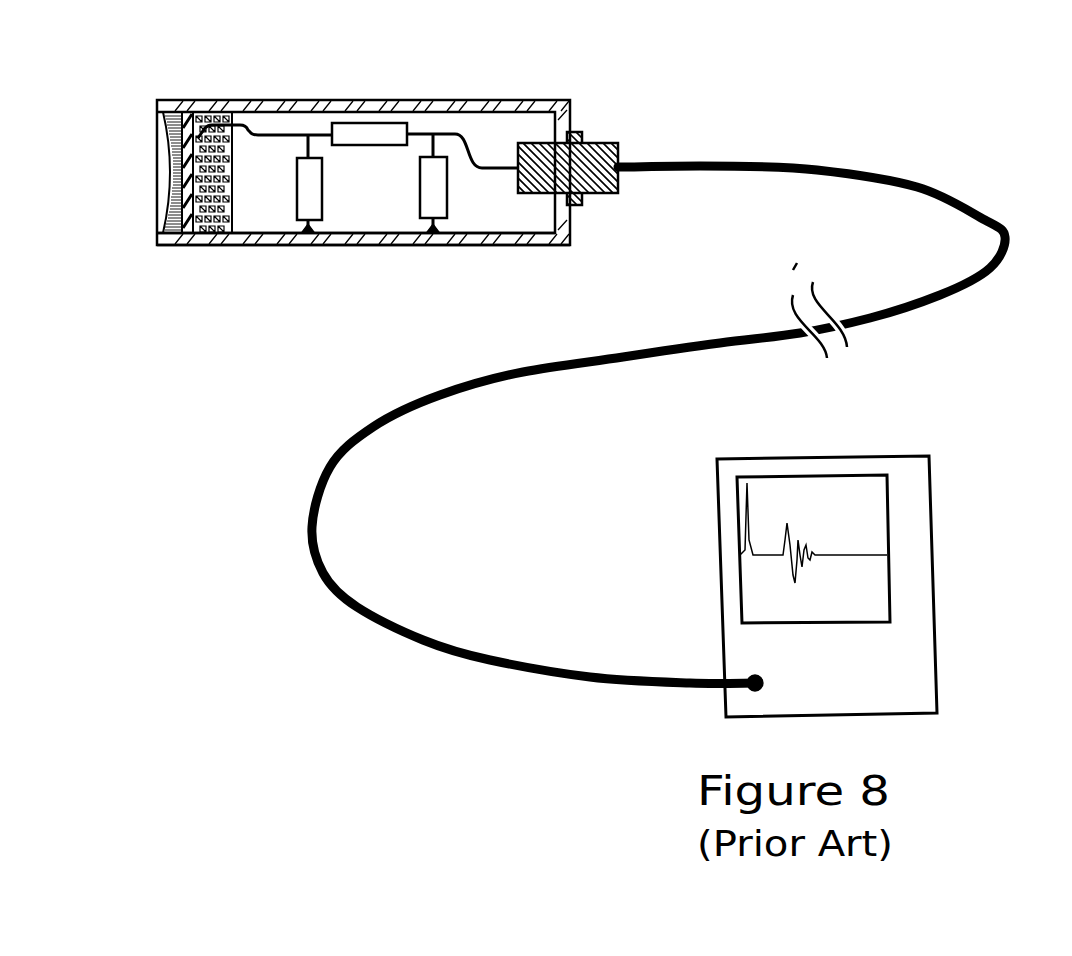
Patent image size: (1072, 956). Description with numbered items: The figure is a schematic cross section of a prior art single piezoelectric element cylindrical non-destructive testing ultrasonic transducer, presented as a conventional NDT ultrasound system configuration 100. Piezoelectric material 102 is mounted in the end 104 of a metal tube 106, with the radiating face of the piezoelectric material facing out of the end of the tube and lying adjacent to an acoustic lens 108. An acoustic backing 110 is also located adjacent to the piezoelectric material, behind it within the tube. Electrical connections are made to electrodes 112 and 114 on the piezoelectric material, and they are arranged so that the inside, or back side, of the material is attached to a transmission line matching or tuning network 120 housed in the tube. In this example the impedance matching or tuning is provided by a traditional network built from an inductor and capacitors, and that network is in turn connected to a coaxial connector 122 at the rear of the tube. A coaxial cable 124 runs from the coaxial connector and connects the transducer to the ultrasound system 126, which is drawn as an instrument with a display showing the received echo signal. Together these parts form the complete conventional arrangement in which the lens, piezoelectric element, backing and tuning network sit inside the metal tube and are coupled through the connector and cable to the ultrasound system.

The NDT ultrasound system configuration 100 is at (240, 433).
The piezoelectric material 102 is at (190, 108).
The end 104 is at (170, 243).
The metal tube 106 is at (515, 93).
The acoustic lens 108 is at (167, 195).
The acoustic backing 110 is at (217, 214).
The electrode 112 is at (201, 136).
The electrode 114 is at (183, 235).
The transmission line matching or tuning network 120 is at (383, 199).
The coaxial connector 122 is at (632, 171).
The coaxial cable 124 is at (820, 163).
The ultrasound system 126 is at (941, 644).